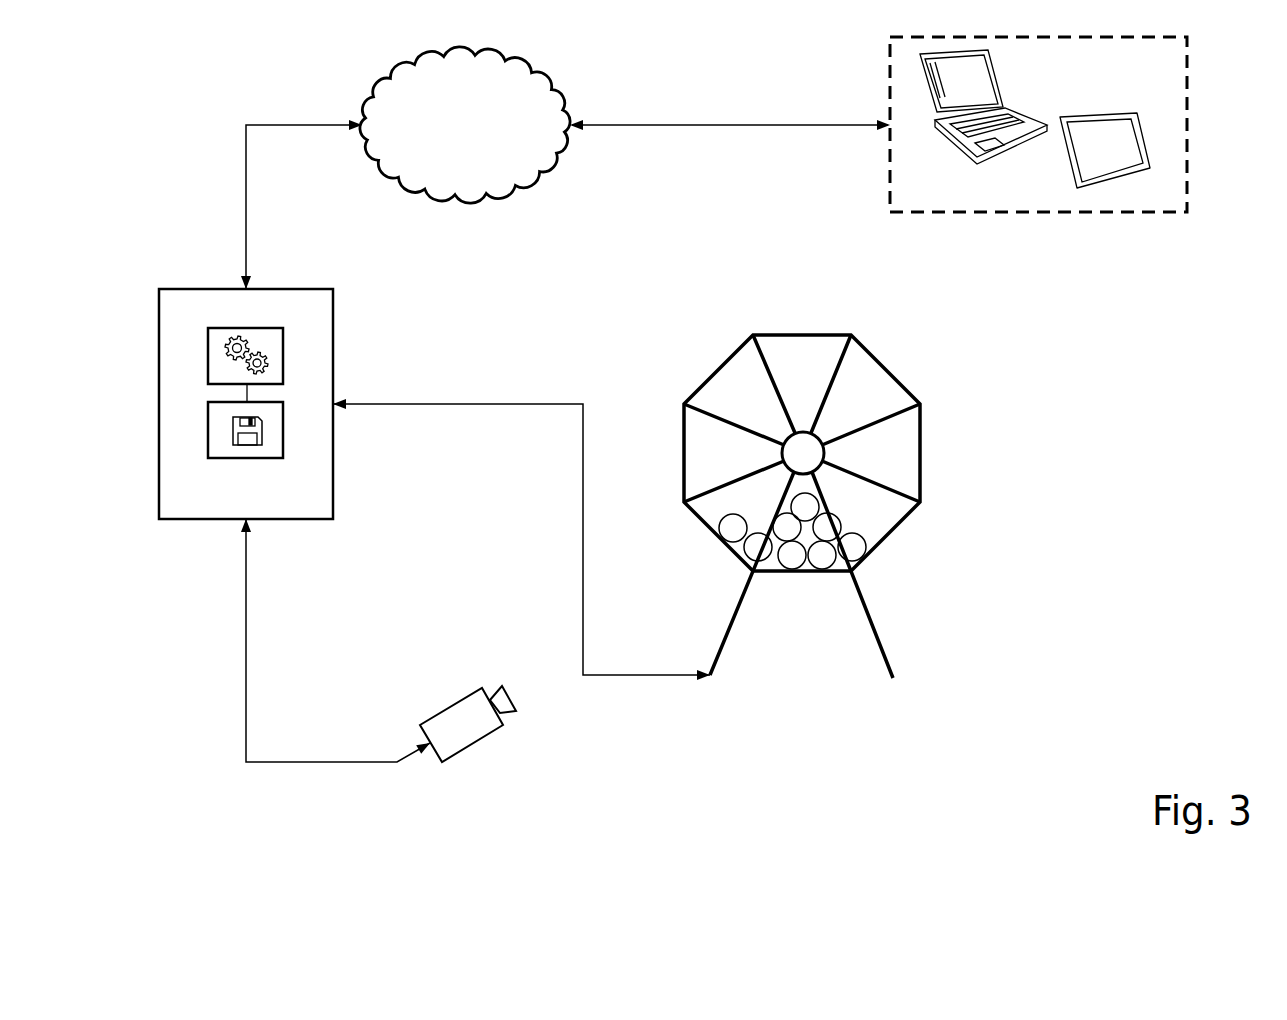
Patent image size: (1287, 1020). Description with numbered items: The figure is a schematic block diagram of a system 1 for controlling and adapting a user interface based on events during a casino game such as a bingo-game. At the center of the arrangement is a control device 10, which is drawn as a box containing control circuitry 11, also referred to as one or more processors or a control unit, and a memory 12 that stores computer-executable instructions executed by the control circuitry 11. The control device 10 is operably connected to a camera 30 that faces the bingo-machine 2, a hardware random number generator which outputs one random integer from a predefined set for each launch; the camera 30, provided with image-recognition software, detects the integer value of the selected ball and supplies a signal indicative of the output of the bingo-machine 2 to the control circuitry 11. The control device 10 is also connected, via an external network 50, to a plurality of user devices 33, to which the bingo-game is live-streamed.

The system 1 is at (640, 755).
The bingo-machine 2 is at (923, 403).
The control device 10 is at (307, 289).
The control circuitry 11 is at (247, 327).
The memory 12 is at (247, 458).
The camera 30 is at (483, 740).
The user device 33 is at (958, 143).
The external network 50 is at (465, 197).